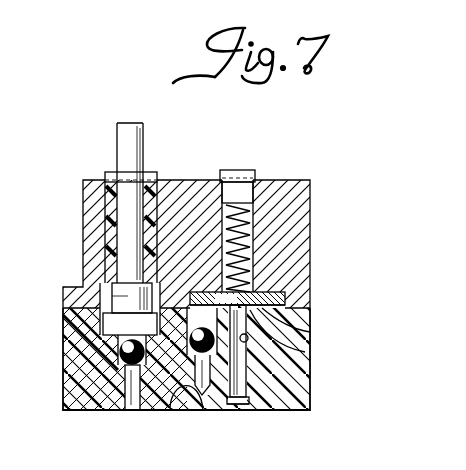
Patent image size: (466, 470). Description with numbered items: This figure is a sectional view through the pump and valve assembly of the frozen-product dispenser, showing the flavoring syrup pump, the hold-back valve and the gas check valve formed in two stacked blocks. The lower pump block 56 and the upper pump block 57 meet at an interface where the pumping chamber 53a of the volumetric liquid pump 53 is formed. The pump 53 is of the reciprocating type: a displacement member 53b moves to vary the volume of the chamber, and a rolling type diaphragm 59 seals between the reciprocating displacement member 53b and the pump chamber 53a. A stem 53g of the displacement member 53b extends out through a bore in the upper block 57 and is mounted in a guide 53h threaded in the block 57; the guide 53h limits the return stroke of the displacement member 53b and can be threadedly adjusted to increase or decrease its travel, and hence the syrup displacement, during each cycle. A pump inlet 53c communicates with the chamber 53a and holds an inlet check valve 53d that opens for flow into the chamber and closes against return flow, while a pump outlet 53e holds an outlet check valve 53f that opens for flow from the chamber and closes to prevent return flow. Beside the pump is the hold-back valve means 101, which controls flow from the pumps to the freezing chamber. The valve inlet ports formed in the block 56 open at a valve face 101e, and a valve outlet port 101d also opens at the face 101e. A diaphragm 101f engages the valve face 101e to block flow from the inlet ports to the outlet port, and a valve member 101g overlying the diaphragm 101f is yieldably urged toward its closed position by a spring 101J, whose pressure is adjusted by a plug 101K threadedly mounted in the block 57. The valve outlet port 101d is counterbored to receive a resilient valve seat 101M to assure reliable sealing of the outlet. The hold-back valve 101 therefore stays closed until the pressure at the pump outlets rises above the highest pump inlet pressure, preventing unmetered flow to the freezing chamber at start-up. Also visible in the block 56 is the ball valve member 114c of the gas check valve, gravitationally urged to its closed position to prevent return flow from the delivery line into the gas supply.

The volumetric liquid pump 53 is at (93, 240).
The pumping chamber 53a is at (121, 352).
The displacement member 53b is at (118, 297).
The pump inlet 53c is at (120, 412).
The inlet check valve 53d is at (105, 368).
The pump outlet 53e is at (203, 410).
The outlet check valve 53f is at (207, 412).
The stem 53g is at (137, 146).
The guide 53h is at (105, 176).
The pump block 56 is at (312, 377).
The pump block 57 is at (310, 253).
The rolling type diaphragm 59 is at (112, 301).
The hold-back valve means 101 is at (289, 283).
The spring 101J is at (253, 207).
The plug 101K is at (251, 176).
The valve member 101g is at (270, 262).
The diaphragm 101f is at (300, 292).
The valve face 101e is at (300, 325).
The resilient valve seat 101M is at (302, 348).
The valve outlet port 101d is at (272, 404).
The ball valve member 114c is at (243, 342).